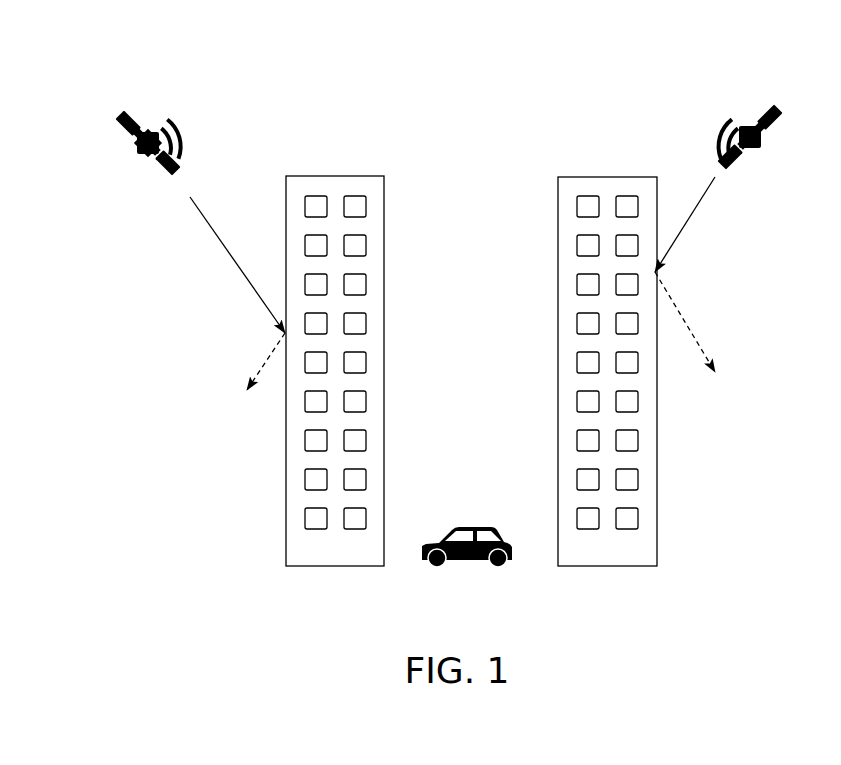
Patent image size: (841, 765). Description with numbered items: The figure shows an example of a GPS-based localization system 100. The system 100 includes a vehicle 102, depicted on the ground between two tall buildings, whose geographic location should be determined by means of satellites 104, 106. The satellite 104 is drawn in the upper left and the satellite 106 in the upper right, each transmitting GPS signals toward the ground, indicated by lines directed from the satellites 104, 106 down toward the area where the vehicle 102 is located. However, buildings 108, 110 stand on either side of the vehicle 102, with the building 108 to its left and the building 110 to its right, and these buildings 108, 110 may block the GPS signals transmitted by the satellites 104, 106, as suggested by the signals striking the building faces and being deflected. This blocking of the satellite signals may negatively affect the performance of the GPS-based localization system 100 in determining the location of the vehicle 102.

The GPS-based localization system 100 is at (360, 98).
The vehicle 102 is at (460, 520).
The satellite 104 is at (141, 185).
The satellite 106 is at (756, 170).
The building 108 is at (317, 554).
The building 110 is at (589, 554).